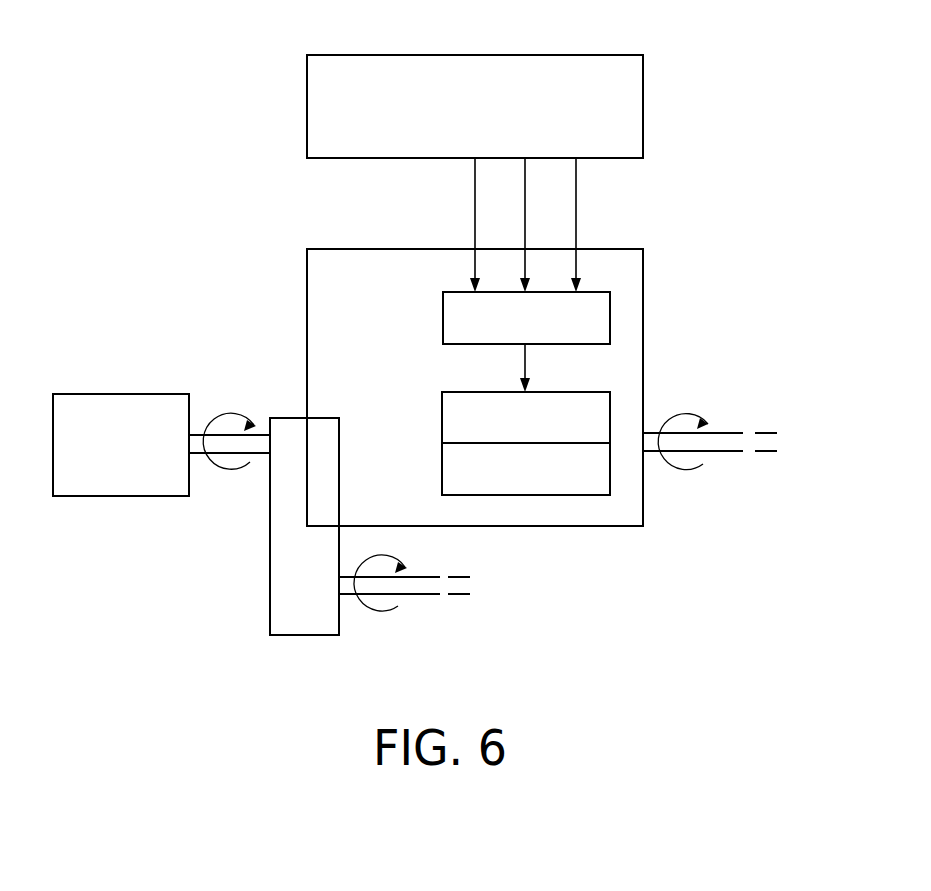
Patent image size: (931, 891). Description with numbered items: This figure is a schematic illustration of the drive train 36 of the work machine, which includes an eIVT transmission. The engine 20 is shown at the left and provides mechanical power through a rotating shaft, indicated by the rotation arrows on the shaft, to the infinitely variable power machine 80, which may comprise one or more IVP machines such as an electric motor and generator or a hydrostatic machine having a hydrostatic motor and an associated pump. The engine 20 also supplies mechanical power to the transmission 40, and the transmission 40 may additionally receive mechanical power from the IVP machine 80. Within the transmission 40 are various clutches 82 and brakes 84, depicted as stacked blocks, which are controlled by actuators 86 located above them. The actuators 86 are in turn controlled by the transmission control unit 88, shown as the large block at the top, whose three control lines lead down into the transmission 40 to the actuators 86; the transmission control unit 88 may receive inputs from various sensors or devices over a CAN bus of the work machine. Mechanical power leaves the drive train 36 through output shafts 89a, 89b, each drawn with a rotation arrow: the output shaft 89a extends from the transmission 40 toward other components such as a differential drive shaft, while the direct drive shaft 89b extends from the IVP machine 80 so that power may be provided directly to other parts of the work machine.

The transmission control unit 88 is at (343, 55).
The transmission 40 is at (328, 249).
The drive train 36 is at (674, 328).
The actuators 86 is at (443, 292).
The clutches 82 is at (442, 418).
The brakes 84 is at (442, 470).
The engine 20 is at (120, 394).
The infinitely variable power machine 80 is at (305, 635).
The output shaft 89a is at (733, 451).
The direct drive shaft 89b is at (420, 594).